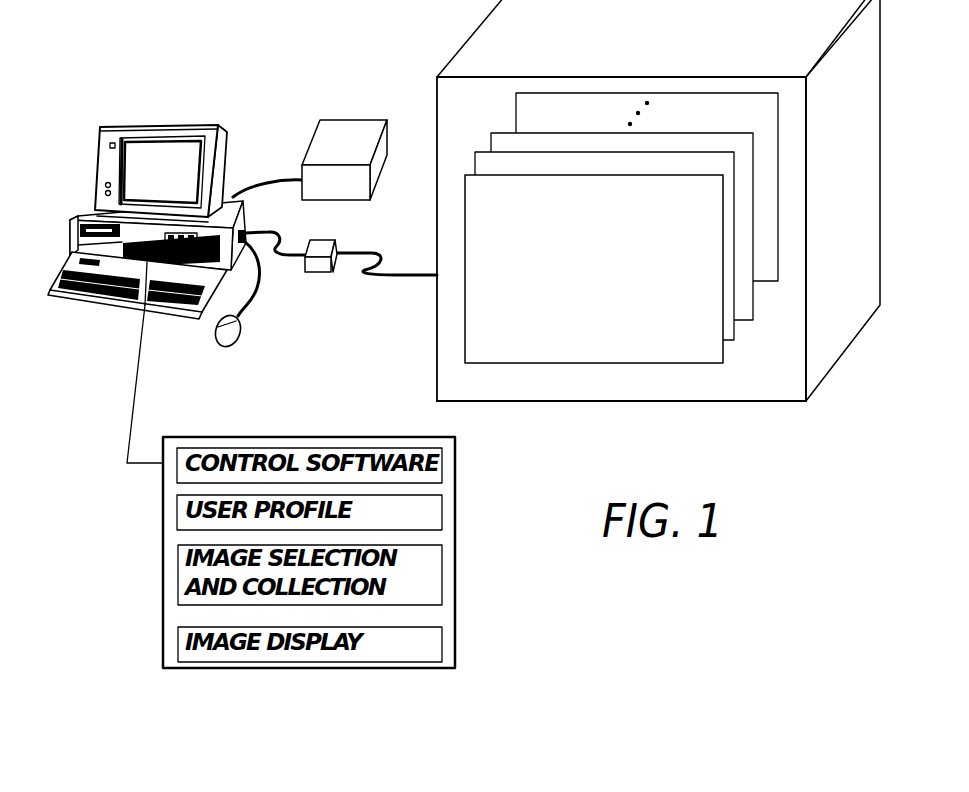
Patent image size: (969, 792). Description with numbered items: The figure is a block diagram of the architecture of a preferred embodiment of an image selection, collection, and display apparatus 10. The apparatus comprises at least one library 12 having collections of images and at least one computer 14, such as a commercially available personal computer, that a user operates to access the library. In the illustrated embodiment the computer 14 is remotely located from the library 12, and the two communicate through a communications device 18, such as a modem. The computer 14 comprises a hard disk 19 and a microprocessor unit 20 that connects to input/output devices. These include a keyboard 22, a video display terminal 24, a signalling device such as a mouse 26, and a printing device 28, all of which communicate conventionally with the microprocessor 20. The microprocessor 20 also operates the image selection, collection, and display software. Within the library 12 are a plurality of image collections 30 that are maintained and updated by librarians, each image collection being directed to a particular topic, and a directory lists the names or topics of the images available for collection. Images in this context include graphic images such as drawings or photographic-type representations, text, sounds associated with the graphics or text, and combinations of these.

The image selection, collection, and display apparatus 10 is at (203, 99).
The library 12 is at (445, 203).
The computer 14 is at (68, 187).
The communications device 18 is at (313, 270).
The hard disk 19 is at (244, 230).
The microprocessor unit 20 is at (93, 233).
The keyboard 22 is at (122, 293).
The video display terminal 24 is at (222, 167).
The mouse 26 is at (242, 328).
The printing device 28 is at (348, 130).
The image collections 30 is at (465, 310).